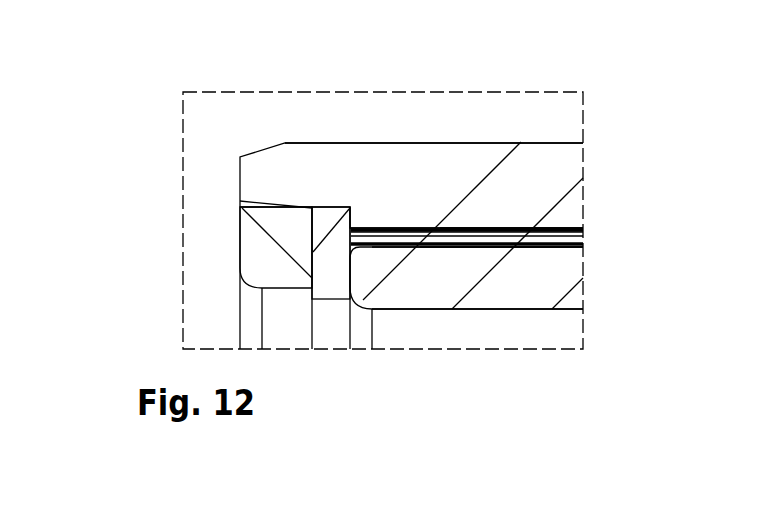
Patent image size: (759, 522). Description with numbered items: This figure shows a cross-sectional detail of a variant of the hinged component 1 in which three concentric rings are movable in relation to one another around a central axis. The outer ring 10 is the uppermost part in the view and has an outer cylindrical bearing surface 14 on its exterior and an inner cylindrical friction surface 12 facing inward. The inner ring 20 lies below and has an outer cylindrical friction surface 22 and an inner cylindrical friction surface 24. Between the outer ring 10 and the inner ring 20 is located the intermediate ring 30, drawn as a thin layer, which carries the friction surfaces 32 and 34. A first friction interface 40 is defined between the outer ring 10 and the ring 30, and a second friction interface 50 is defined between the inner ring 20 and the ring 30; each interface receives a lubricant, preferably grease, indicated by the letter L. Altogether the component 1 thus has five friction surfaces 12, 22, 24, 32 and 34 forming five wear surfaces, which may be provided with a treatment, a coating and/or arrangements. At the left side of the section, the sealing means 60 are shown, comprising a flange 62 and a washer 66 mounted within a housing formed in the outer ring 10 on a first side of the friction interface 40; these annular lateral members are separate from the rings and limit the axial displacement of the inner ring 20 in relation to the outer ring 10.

The hinged component 1 is at (218, 147).
The outer ring 10 is at (557, 165).
The inner cylindrical friction surface 12 is at (402, 244).
The outer cylindrical bearing surface 14 is at (352, 143).
The inner ring 20 is at (558, 282).
The outer cylindrical friction surface 22 is at (480, 228).
The inner cylindrical friction surface 24 is at (533, 312).
The intermediate ring 30 is at (585, 236).
The friction surface 32 is at (445, 250).
The friction surface 34 is at (420, 228).
The first friction interface 40 is at (588, 228).
The second friction interface 50 is at (590, 246).
The sealing means 60 is at (227, 297).
The flange 62 is at (262, 260).
The washer 66 is at (335, 288).